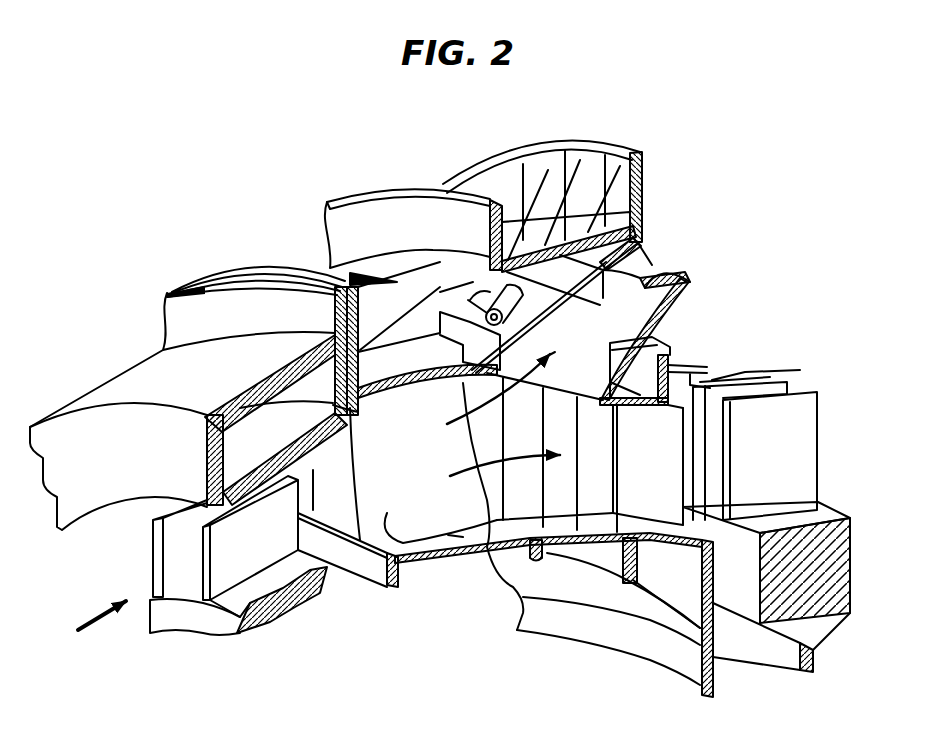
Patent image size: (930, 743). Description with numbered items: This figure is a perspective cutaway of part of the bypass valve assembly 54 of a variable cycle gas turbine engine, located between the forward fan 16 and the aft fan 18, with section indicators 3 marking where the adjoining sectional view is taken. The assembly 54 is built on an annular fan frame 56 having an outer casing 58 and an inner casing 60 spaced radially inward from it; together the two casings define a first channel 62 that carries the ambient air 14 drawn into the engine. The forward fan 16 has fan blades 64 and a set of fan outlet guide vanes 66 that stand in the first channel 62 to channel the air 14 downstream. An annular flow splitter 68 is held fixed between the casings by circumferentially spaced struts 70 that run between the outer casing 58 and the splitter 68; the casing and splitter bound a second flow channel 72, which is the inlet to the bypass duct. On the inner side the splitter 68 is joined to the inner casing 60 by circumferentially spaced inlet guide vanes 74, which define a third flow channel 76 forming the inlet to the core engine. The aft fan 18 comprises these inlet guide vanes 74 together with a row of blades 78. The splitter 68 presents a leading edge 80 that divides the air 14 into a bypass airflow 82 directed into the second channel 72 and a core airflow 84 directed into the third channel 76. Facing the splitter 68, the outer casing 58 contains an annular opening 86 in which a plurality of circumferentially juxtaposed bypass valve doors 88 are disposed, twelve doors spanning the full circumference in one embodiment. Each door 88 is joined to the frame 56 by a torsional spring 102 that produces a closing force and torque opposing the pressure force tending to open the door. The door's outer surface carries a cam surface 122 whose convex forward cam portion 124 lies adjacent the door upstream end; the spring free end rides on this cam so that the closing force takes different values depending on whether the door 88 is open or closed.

The section line 3- 3 is at (733, 94).
The ambient air 14 is at (98, 614).
The forward fan 16 is at (349, 598).
The aft fan 18 is at (620, 598).
The bypass valve assembly 54 is at (556, 134).
The annular fan frame 56 is at (393, 185).
The outer casing 58 is at (397, 375).
The inner casing 60 is at (465, 545).
The first channel 62 is at (429, 504).
The fan blades 64 is at (252, 556).
The fan outlet guide vanes 66 is at (405, 548).
The annular flow splitter 68 is at (658, 345).
The struts 70 is at (665, 272).
The second flow channel 72 is at (655, 290).
The inlet guide vanes 74 is at (695, 378).
The third flow channel 76 is at (664, 474).
The blades 78 is at (795, 410).
The leading edge 80 is at (594, 398).
The bypass airflow 82 is at (447, 423).
The core airflow 84 is at (458, 468).
The annular opening 86 is at (640, 244).
The bypass valve doors 88 is at (540, 385).
The torsional spring 102 is at (482, 295).
The cam surface 122 is at (545, 300).
The convex forward cam portion 124 is at (552, 356).